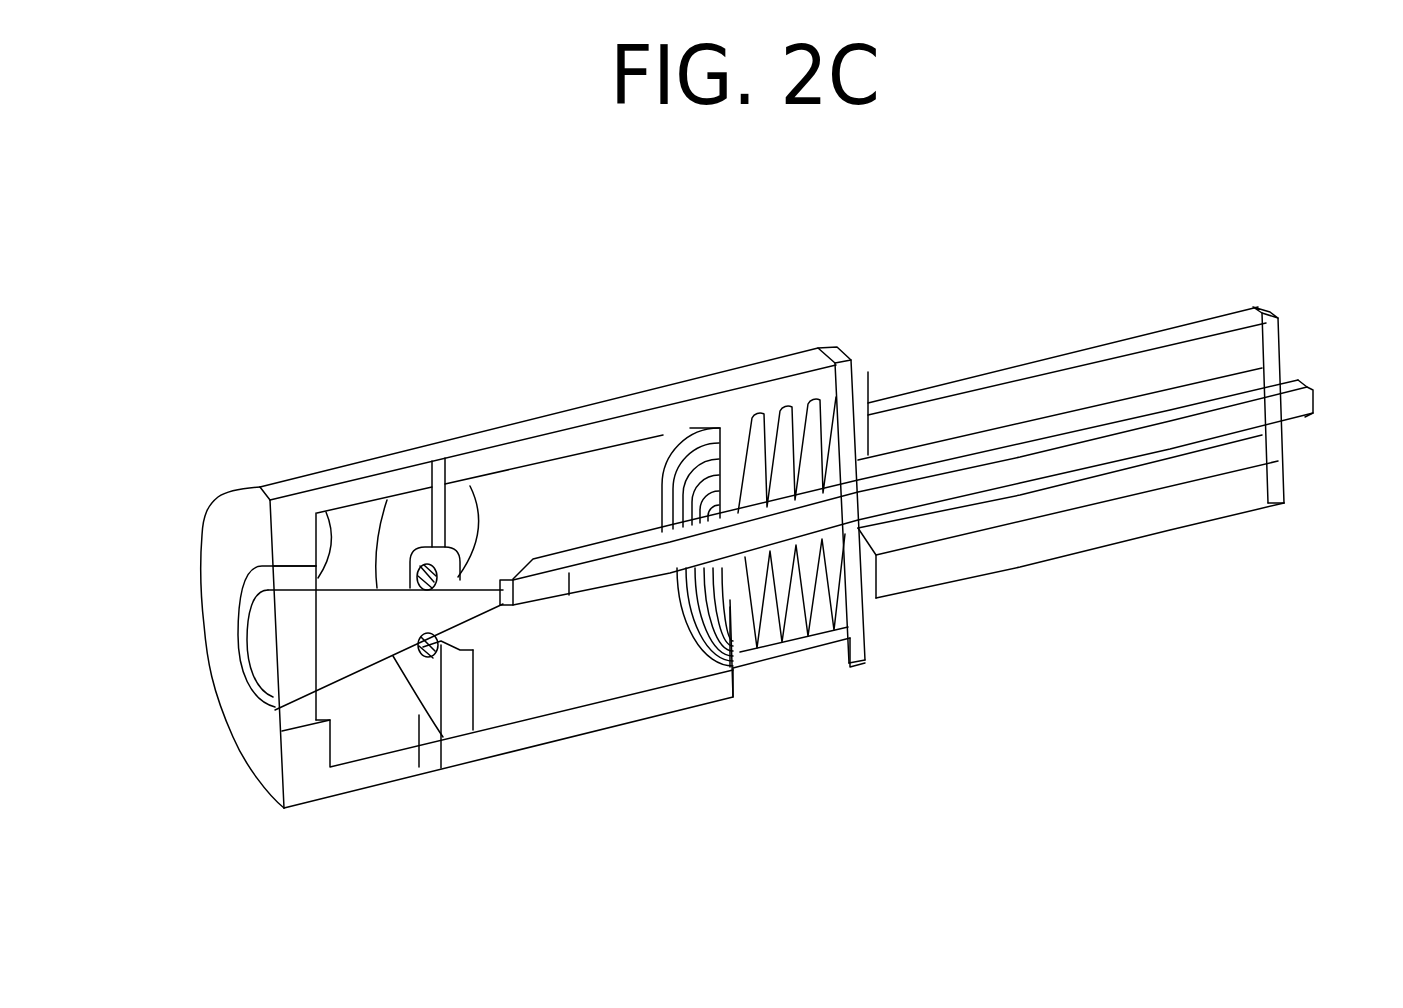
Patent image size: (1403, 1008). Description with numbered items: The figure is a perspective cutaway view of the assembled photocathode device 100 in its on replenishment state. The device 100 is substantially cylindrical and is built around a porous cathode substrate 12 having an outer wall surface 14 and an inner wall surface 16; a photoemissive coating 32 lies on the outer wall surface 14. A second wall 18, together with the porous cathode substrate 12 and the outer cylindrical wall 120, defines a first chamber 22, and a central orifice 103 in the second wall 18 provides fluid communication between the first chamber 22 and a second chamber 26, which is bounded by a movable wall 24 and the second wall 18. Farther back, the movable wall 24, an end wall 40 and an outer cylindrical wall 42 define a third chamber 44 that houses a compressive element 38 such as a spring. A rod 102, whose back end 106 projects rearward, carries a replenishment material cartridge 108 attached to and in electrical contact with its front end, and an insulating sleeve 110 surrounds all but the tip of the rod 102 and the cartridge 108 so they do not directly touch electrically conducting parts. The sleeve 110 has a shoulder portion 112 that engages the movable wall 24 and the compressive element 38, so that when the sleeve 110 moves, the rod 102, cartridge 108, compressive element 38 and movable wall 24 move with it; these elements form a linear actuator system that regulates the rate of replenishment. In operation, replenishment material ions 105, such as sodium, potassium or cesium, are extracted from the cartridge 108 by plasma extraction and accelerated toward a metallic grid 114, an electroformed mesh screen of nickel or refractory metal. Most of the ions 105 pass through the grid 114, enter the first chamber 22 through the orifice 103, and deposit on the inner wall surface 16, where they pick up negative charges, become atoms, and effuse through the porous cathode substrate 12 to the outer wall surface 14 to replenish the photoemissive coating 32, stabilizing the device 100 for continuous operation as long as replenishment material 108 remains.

The photocathode device 100 is at (334, 276).
The outer wall surface 14 is at (213, 545).
The inner wall surface 16 is at (326, 512).
The outer cylindrical wall 120 is at (354, 492).
The second wall 18 is at (447, 462).
The central orifice 103 is at (473, 500).
The second chamber 26 is at (583, 495).
The movable wall 24 is at (668, 440).
The compressive element 38 is at (760, 430).
The end wall 40 is at (850, 362).
The insulating sleeve 110 is at (1022, 447).
The rod 102 is at (1152, 440).
The back end 106 is at (1300, 395).
The photoemissive coating 32 is at (263, 643).
The porous cathode substrate 12 is at (290, 688).
The first chamber 22 is at (357, 760).
The metallic grid 114 is at (418, 730).
The replenishment material ions 105 is at (482, 615).
The replenishment material cartridge 108 is at (560, 582).
The shoulder portion 112 is at (750, 643).
The third chamber 44 is at (780, 647).
The outer cylindrical wall 42 is at (823, 663).